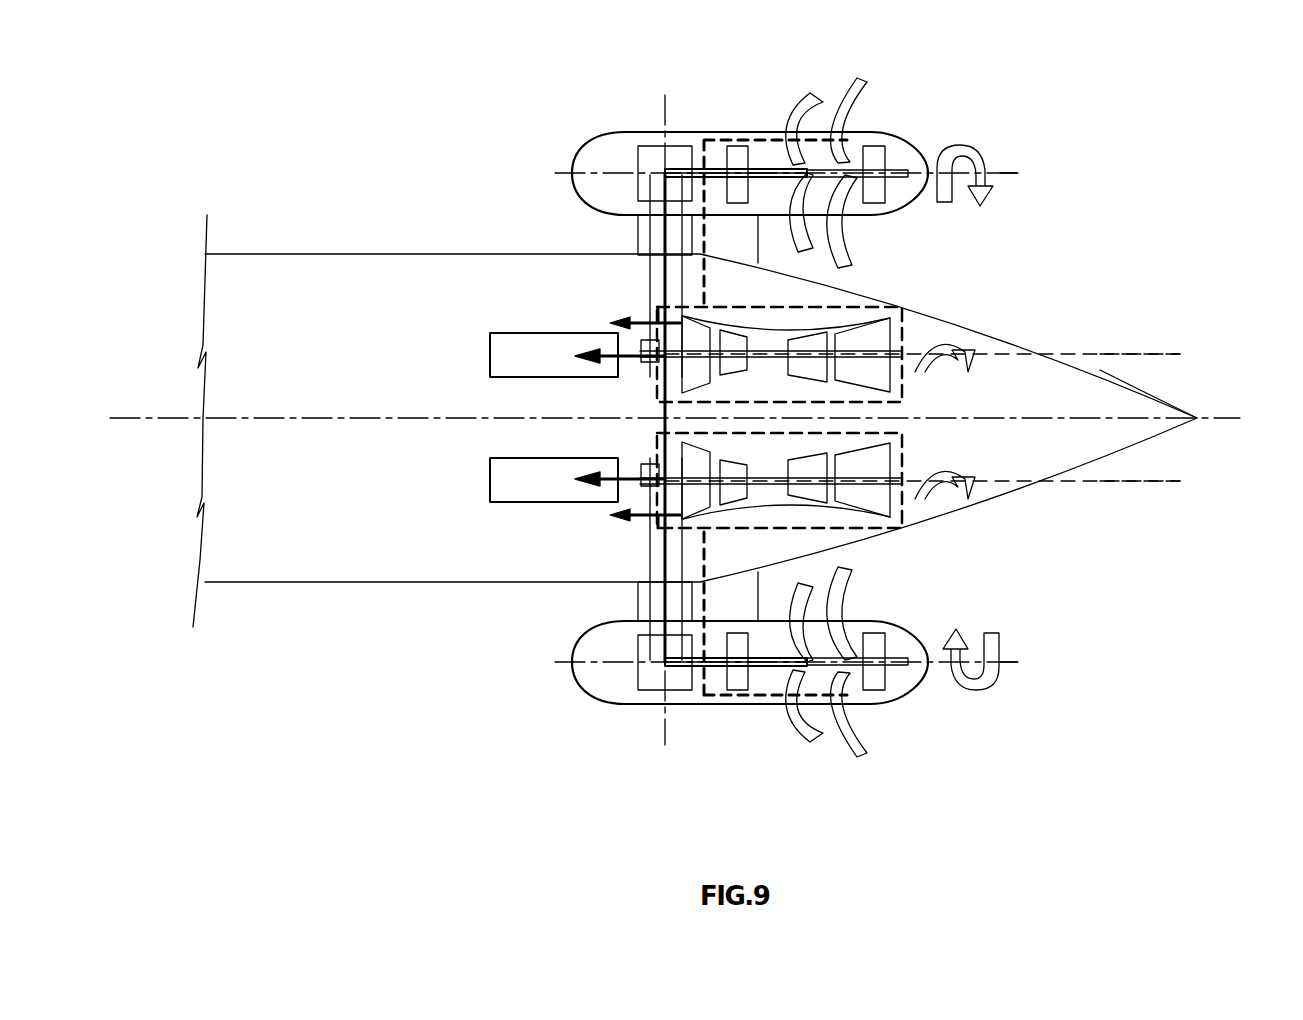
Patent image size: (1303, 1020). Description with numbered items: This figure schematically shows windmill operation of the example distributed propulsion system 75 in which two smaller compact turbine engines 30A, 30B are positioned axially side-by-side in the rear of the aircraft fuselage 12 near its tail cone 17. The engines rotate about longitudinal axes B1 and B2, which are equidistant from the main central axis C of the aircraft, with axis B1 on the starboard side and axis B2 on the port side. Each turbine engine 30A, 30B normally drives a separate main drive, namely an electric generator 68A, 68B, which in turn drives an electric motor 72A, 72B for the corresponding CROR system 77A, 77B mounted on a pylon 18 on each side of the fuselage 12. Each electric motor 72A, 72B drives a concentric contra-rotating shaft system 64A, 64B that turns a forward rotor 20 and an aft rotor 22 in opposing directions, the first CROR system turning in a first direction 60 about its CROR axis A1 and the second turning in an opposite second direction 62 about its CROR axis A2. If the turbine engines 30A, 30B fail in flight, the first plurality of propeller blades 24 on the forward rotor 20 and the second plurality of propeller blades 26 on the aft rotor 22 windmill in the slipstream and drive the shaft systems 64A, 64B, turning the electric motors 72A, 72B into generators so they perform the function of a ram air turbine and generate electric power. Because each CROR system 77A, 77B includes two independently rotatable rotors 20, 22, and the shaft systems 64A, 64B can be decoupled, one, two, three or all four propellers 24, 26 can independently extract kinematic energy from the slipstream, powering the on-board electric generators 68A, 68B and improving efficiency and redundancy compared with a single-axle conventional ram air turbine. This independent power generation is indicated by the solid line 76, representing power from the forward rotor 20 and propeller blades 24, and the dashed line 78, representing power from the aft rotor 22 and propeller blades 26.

The aircraft fuselage 12 is at (360, 246).
The tail cone 17 is at (1174, 396).
The pylon 18 is at (630, 248).
The forward rotor 20 is at (787, 670).
The aft rotor 22 is at (847, 677).
The first plurality of propeller blades 24 is at (817, 740).
The second plurality of propeller blades 26 is at (853, 733).
The turbine engine 30A is at (878, 333).
The turbine engine 30B is at (858, 490).
The first direction 60 is at (990, 150).
The second direction 62 is at (990, 678).
The concentric contra-rotating shaft system 64A is at (773, 163).
The concentric contra-rotating shaft system 64B is at (723, 667).
The electric generator 68A is at (488, 353).
The electric generator 68B is at (488, 482).
The electric motor 72A is at (648, 158).
The electric motor 72B is at (650, 675).
The propulsion system 75 is at (1165, 162).
The solid line 76 is at (637, 230).
The CROR system 77A is at (992, 112).
The CROR system 77B is at (990, 784).
The dashed line 78 is at (707, 132).
The CROR axis A1 is at (1018, 178).
The CROR axis A2 is at (1010, 660).
The longitudinal axis B1 is at (1125, 354).
The longitudinal axis B2 is at (1125, 482).
The aircraft longitudinal axis C is at (1237, 418).